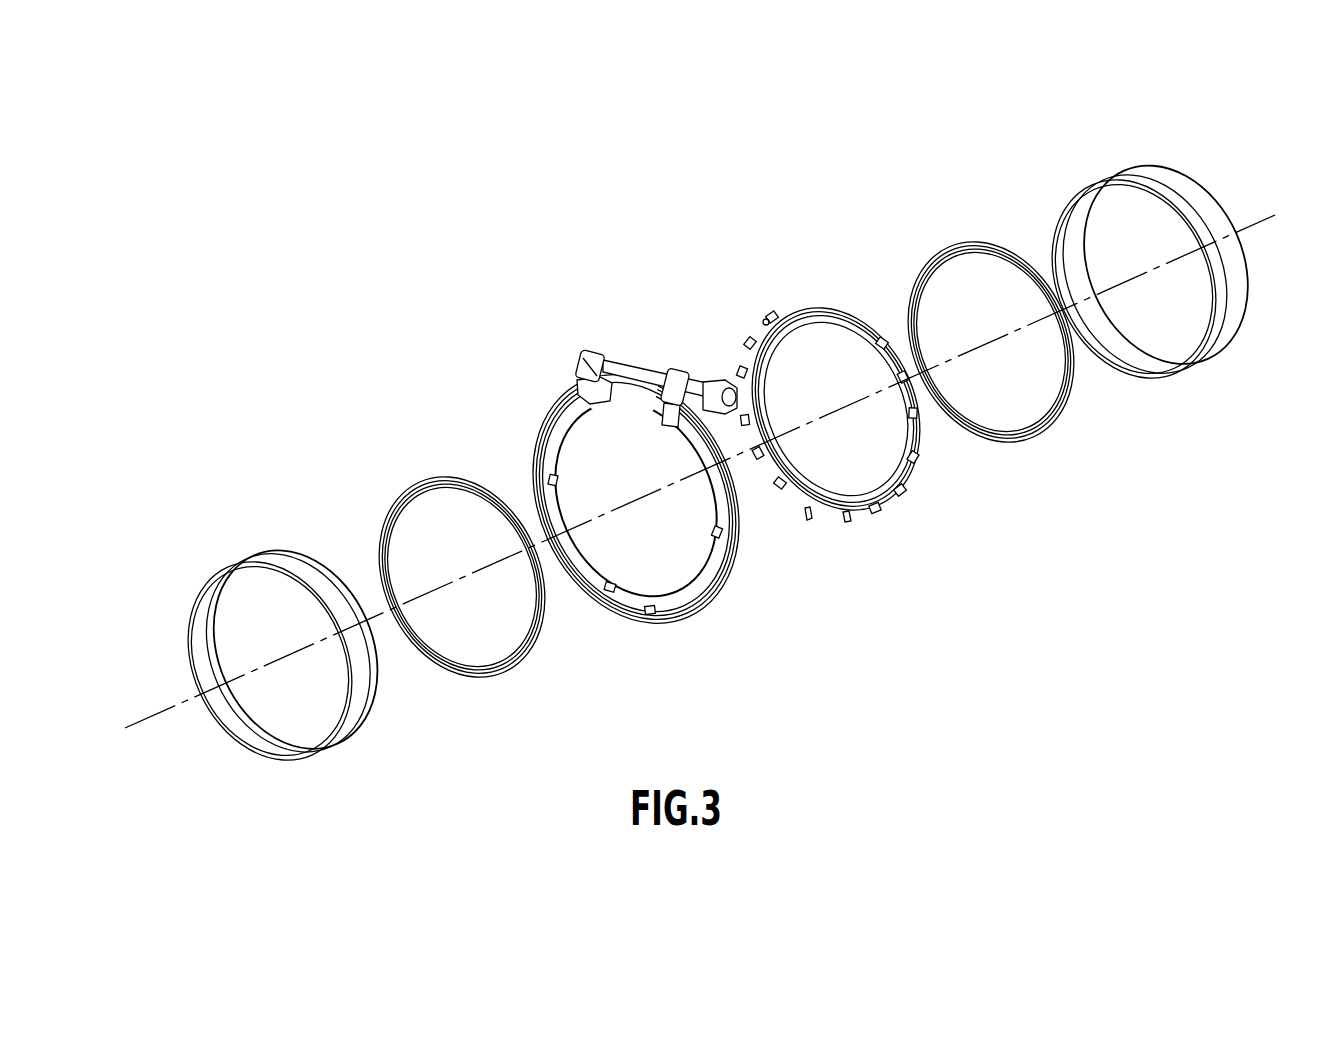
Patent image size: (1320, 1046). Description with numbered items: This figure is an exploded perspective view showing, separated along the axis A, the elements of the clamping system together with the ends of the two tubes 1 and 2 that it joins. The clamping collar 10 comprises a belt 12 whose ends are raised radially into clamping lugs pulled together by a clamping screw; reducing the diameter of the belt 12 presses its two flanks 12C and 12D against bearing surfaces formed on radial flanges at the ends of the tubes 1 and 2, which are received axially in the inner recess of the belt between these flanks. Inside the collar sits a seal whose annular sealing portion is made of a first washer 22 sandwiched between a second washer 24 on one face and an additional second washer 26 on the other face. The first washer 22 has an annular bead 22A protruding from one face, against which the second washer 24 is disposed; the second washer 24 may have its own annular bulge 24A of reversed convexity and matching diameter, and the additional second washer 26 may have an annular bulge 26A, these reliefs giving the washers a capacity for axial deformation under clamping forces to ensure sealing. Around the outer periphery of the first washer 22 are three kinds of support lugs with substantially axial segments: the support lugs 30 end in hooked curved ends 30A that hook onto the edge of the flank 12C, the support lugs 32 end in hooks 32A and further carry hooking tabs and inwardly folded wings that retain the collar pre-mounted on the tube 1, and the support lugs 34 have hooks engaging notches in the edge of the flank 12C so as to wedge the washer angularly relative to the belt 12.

The tube 1 is at (226, 544).
The tube 2 is at (1124, 147).
The clamping collar 10 is at (630, 666).
The belt 12 is at (624, 494).
The flank 12C is at (546, 434).
The flank 12D is at (573, 430).
The first washer 22 is at (857, 320).
The annular bead 22A is at (823, 306).
The second washer 24 is at (461, 576).
The annular bulge 24A is at (468, 477).
The additional second washer 26 is at (990, 329).
The annular bulge 26A is at (958, 247).
The support lug 30 is at (773, 313).
The hook 30A is at (766, 320).
The support lug 32 is at (746, 341).
The hook 32A is at (880, 511).
The support lug 34 is at (848, 521).
The axis A is at (126, 730).